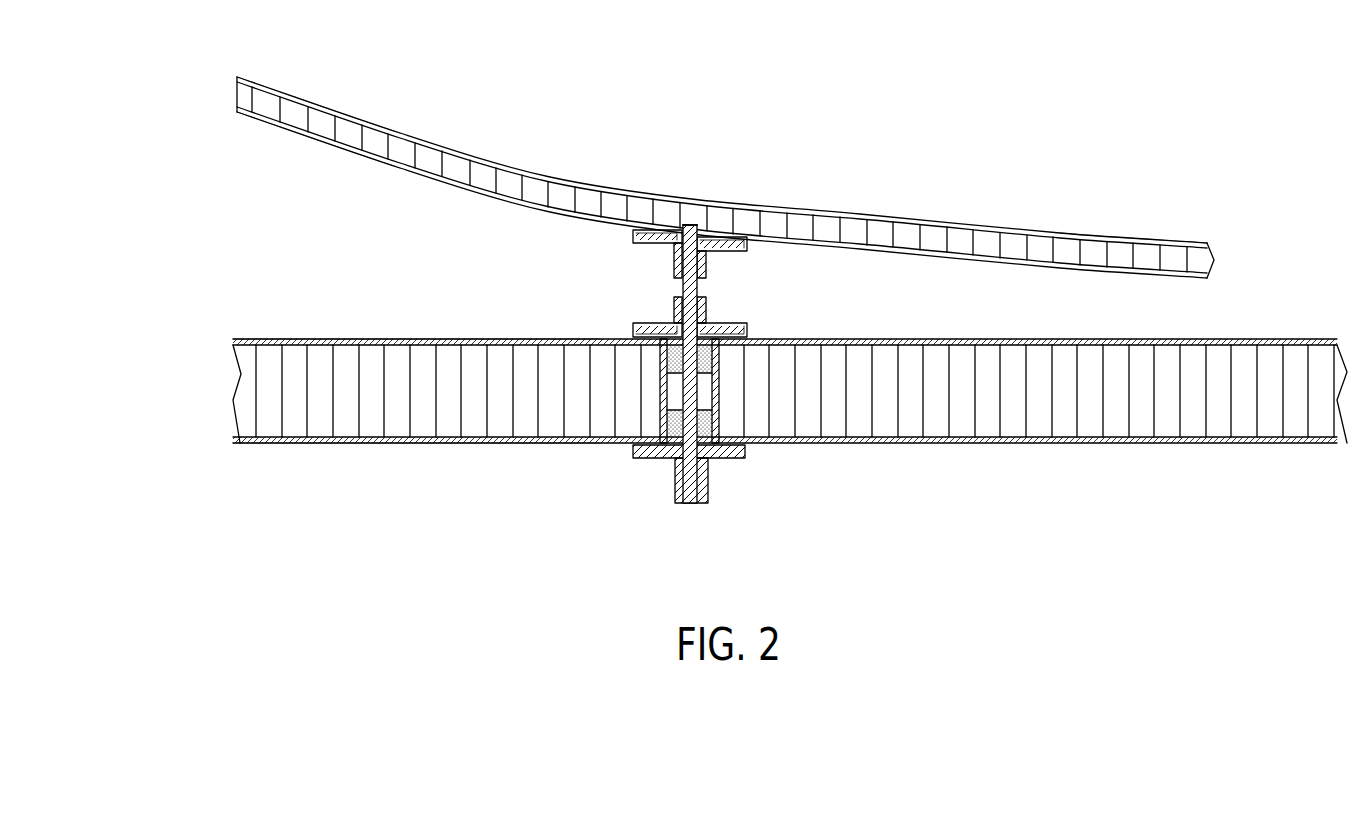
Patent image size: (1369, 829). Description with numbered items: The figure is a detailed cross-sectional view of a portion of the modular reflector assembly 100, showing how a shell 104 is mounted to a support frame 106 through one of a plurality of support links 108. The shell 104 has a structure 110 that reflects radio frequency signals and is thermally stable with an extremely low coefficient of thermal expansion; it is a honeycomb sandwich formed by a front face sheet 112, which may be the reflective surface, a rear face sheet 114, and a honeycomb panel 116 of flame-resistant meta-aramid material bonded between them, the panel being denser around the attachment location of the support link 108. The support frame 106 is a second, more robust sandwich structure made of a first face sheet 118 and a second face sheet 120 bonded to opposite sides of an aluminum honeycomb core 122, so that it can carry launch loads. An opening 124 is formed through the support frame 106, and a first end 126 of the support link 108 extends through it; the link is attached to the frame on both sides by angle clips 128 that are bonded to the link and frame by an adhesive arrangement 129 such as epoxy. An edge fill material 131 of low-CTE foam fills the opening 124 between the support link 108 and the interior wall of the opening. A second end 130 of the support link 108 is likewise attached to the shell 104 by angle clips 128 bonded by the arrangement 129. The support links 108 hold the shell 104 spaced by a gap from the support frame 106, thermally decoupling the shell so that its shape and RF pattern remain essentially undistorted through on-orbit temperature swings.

The modular reflector assembly 100 is at (978, 103).
The shell 104 is at (688, 163).
The support frame 106 is at (753, 407).
The support link 108 is at (672, 330).
The structure 110 is at (1136, 234).
The front face sheet 112 is at (234, 80).
The rear face sheet 114 is at (232, 114).
The honeycomb panel 116 is at (241, 104).
The first face sheet 118 is at (234, 341).
The second face sheet 120 is at (234, 441).
The honeycomb core 122 is at (240, 405).
The opening 124 is at (672, 428).
The first end 126 is at (690, 505).
The angle clips 128 is at (646, 247).
The bonding arrangement 129 is at (633, 233).
The second end 130 is at (692, 240).
The edge fill material 131 is at (707, 373).